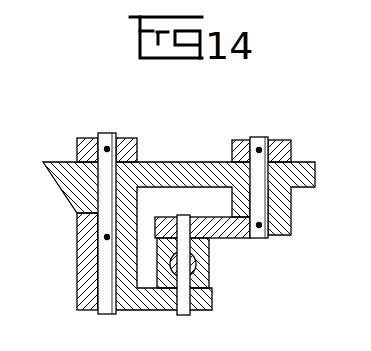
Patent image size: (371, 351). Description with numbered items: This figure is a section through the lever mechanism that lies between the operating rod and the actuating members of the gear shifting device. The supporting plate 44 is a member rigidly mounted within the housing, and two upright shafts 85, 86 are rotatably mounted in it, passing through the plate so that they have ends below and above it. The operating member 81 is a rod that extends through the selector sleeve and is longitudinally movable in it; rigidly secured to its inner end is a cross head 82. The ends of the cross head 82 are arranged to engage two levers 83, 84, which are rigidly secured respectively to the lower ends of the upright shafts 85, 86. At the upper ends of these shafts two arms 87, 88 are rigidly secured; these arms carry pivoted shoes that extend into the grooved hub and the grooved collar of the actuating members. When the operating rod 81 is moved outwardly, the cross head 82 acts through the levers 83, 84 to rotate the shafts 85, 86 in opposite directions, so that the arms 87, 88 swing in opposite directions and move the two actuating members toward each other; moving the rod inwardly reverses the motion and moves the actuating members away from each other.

The supporting plate 44 is at (315, 175).
The operating member 81 is at (210, 263).
The cross head 82 is at (212, 247).
The lever 83 is at (292, 227).
The lever 84 is at (78, 280).
The upright shaft 85 is at (292, 202).
The upright shaft 86 is at (102, 219).
The arm 87 is at (292, 151).
The arm 88 is at (79, 143).